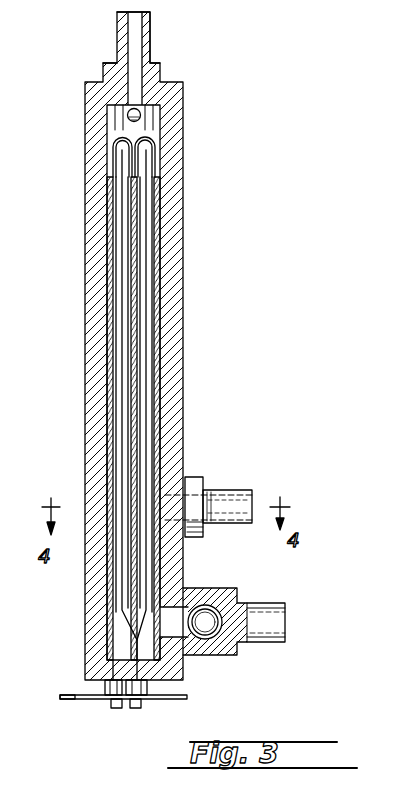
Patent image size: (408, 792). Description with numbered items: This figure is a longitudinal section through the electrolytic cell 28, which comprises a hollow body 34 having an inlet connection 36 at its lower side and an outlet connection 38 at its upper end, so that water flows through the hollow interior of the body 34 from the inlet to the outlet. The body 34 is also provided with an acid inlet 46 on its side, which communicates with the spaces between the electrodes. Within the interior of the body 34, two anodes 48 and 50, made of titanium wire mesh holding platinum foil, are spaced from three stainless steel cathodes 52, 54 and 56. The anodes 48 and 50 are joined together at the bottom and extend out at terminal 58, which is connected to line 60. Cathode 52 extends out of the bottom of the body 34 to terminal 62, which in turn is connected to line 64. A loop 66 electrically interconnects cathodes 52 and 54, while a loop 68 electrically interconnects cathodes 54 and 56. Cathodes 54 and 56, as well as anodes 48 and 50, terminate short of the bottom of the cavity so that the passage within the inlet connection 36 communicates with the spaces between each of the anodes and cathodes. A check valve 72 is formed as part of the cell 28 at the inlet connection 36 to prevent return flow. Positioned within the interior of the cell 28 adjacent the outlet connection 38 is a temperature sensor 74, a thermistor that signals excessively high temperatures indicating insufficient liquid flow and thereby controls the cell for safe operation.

The electrolytic cell 28 is at (156, 378).
The hollow body 34 is at (172, 270).
The inlet connection 36 is at (238, 598).
The outlet connection 38 is at (162, 71).
The acid inlet 46 is at (203, 478).
The anode 48 is at (126, 315).
The anode 50 is at (150, 343).
The cathode 52 is at (109, 207).
The cathode 54 is at (127, 236).
The cathode 56 is at (155, 266).
The terminal 58 is at (135, 710).
The line 60 is at (187, 697).
The terminal 62 is at (117, 710).
The line 64 is at (68, 700).
The loop 66 is at (114, 156).
The loop 68 is at (157, 157).
The check valve 72 is at (206, 615).
The temperature sensor 74 is at (141, 115).